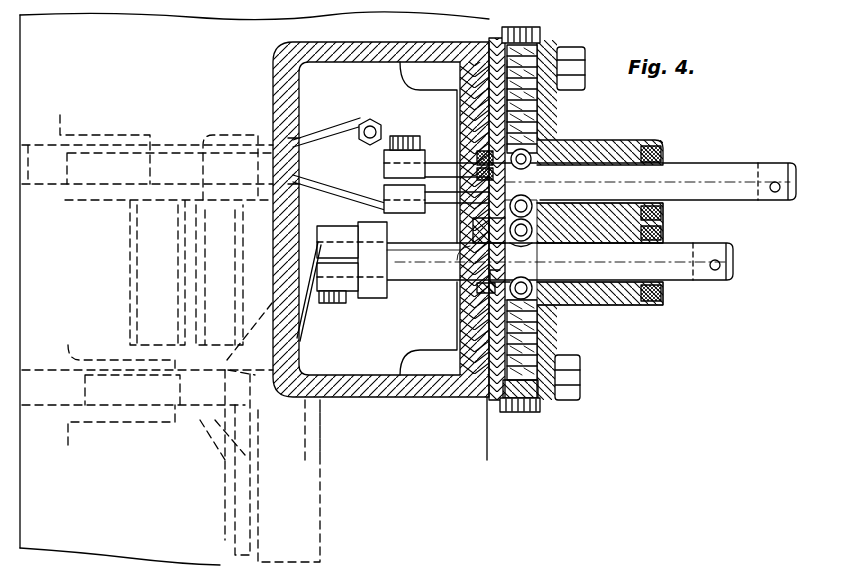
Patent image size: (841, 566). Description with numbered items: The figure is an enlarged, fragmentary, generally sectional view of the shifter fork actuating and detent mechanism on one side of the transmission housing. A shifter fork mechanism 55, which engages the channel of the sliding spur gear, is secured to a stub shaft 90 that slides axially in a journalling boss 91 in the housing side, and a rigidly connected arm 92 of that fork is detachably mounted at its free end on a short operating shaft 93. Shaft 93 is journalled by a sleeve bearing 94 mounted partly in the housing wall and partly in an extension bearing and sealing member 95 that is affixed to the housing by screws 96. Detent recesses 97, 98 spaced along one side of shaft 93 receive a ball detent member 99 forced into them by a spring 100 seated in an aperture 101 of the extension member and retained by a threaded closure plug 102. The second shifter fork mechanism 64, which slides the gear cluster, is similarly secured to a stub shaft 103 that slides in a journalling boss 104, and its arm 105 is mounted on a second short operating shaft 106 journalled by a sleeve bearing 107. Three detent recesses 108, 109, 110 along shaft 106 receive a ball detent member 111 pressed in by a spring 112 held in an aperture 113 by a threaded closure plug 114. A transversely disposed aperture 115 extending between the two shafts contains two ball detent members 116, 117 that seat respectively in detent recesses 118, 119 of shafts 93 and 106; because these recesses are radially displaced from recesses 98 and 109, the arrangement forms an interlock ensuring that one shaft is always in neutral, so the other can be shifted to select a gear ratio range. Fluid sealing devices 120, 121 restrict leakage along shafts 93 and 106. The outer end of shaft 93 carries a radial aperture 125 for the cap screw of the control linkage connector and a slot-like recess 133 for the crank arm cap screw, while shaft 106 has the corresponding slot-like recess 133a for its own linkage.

The shifter fork mechanism 55 is at (245, 492).
The shifter fork mechanism 64 is at (232, 145).
The stub shaft 90 is at (176, 428).
The journalling boss 91 is at (135, 430).
The arm 92 is at (314, 303).
The operating shaft 93 is at (420, 276).
The sleeve bearing 94 is at (482, 292).
The extension bearing and sealing member 95 is at (558, 308).
The screws 96 is at (585, 76).
The detent recess 97 is at (447, 268).
The detent recess 98 is at (545, 282).
The ball detent member 99 is at (514, 280).
The spring 100 is at (490, 394).
The aperture 101 is at (537, 350).
The threaded closure plug 102 is at (532, 412).
The stub shaft 103 is at (162, 150).
The journalling boss 104 is at (128, 135).
The arm 105 is at (318, 140).
The operating shaft 106 is at (436, 160).
The sleeve bearing 107 is at (470, 178).
The detent recess 108 is at (497, 168).
The detent recess 109 is at (533, 162).
The detent recess 110 is at (588, 169).
The ball detent member 111 is at (560, 194).
The spring 112 is at (542, 112).
The aperture 113 is at (548, 126).
The threaded closure plug 114 is at (540, 36).
The transversely disposed aperture 115 is at (534, 226).
The ball detent member 116 is at (535, 244).
The ball detent member 117 is at (534, 206).
The detent recess 118 is at (512, 242).
The detent recess 119 is at (455, 206).
The fluid sealing device 120 is at (662, 305).
The fluid sealing device 121 is at (670, 208).
The radial aperture 125 is at (721, 265).
The slot-like recess 133 is at (708, 284).
The slot-like recess 133a is at (768, 150).